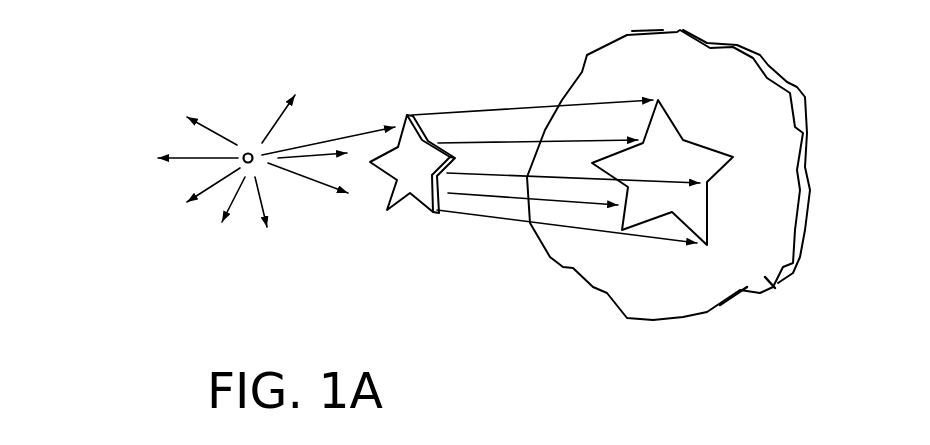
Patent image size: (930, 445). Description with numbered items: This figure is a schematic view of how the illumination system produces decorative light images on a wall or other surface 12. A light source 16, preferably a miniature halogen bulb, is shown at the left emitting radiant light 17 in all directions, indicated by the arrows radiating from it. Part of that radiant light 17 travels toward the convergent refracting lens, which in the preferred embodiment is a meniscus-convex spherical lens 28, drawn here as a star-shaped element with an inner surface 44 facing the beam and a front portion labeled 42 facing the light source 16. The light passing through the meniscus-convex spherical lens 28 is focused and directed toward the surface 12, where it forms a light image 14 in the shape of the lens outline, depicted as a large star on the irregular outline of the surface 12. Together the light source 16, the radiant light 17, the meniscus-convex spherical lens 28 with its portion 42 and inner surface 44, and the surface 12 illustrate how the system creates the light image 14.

The surface 12 is at (777, 151).
The light image 14 is at (683, 138).
The light source 16 is at (200, 173).
The radiant light 17 is at (273, 127).
The meniscus-convex spherical lens 28 is at (418, 130).
The star-shaped aperture (front face) 42 is at (405, 178).
The inner surface 44 is at (413, 162).